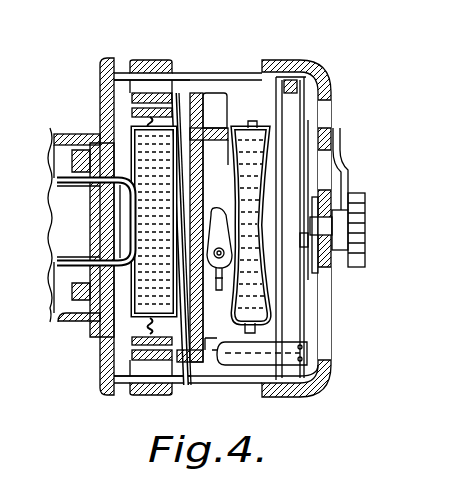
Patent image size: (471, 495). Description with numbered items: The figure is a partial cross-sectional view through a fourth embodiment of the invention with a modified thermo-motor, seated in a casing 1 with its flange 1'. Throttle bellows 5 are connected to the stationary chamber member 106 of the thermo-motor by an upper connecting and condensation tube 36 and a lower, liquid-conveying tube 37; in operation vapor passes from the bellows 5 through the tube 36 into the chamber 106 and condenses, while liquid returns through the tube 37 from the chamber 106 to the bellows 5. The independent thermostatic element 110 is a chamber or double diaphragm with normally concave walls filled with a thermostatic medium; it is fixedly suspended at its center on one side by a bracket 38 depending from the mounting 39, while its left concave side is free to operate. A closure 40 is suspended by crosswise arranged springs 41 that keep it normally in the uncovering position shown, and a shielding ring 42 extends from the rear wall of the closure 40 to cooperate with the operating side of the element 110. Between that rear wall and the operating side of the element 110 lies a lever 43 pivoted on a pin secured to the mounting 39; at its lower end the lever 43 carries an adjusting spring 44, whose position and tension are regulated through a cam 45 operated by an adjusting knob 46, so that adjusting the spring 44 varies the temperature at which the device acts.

The casing 1 is at (56, 225).
The cover flange 1' is at (151, 226).
The throttle bellows 5 is at (72, 264).
The upper connecting and condensation tube 36 is at (88, 200).
The lower liquid-conveying tube 37 is at (90, 257).
The bracket 38 is at (281, 113).
The mounting 39 is at (305, 62).
The closure 40 is at (198, 82).
The springs 41 is at (176, 93).
The shielding ring 42 is at (216, 125).
The lever 43 is at (210, 210).
The adjusting spring 44 is at (236, 388).
The cam 45 is at (317, 375).
The adjusting knob 46 is at (358, 210).
The stationary chamber member 106 is at (130, 318).
The independent thermostatic element 110 is at (266, 296).